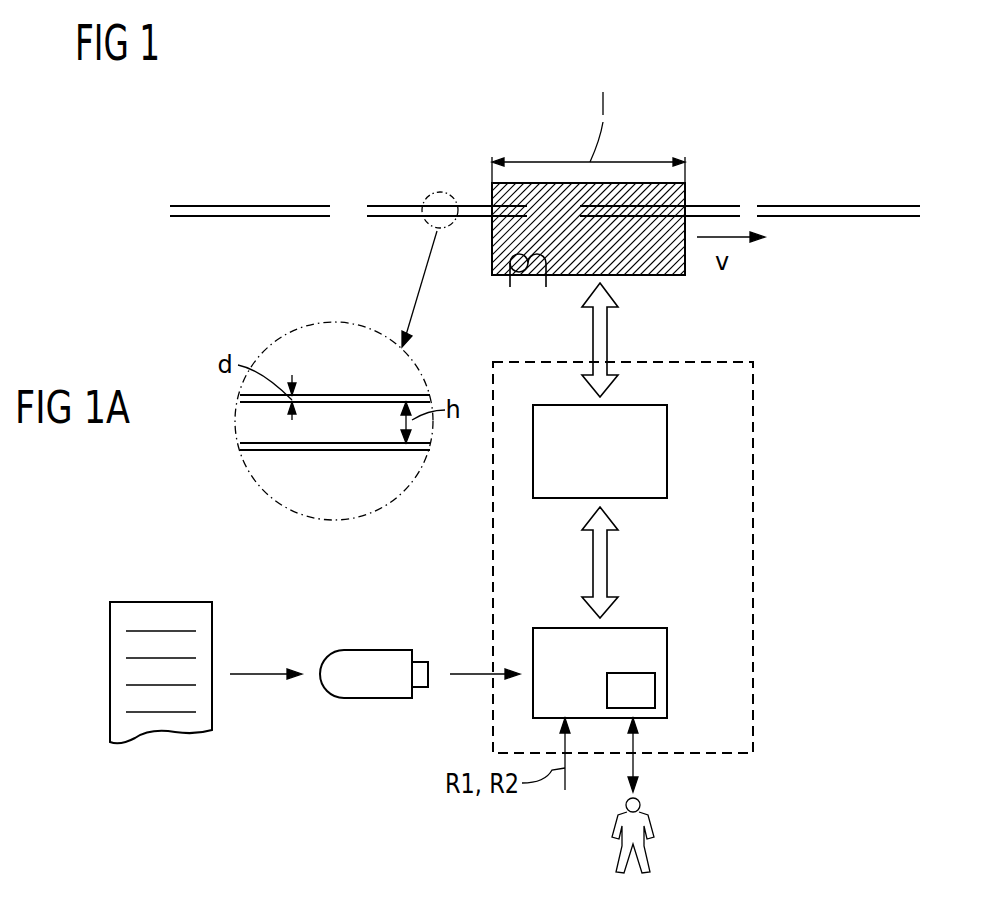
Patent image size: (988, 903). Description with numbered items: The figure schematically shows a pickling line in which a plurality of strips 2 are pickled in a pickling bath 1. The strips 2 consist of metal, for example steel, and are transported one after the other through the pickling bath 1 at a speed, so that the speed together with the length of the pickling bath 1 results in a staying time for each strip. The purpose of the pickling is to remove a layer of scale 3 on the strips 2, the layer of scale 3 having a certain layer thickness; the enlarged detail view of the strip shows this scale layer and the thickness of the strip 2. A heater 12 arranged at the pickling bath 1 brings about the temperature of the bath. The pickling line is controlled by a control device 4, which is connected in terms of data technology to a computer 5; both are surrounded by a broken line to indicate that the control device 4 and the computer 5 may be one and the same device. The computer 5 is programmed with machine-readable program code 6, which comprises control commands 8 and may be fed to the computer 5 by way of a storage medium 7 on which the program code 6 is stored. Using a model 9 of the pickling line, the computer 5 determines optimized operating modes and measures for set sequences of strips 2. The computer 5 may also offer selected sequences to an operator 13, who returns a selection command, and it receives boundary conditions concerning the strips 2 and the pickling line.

In FIG. 1, the pickling bath 1 is at (570, 122).
In FIG. 1, the strips 2 is at (252, 206).
In FIG. 1A, the strips 2 is at (250, 425).
In FIG. 1A, the layer of scale 3 is at (328, 395).
In FIG. 1, the control device 4 is at (667, 452).
In FIG. 1, the computer 5 is at (667, 675).
In FIG. 1, the machine-readable program code 6 is at (133, 636).
In FIG. 1, the storage medium 7 is at (378, 650).
In FIG. 1, the control commands 8 is at (135, 712).
In FIG. 1, the model 9 is at (631, 683).
In FIG. 1, the heater 12 is at (510, 278).
In FIG. 1, the operator 13 is at (651, 823).